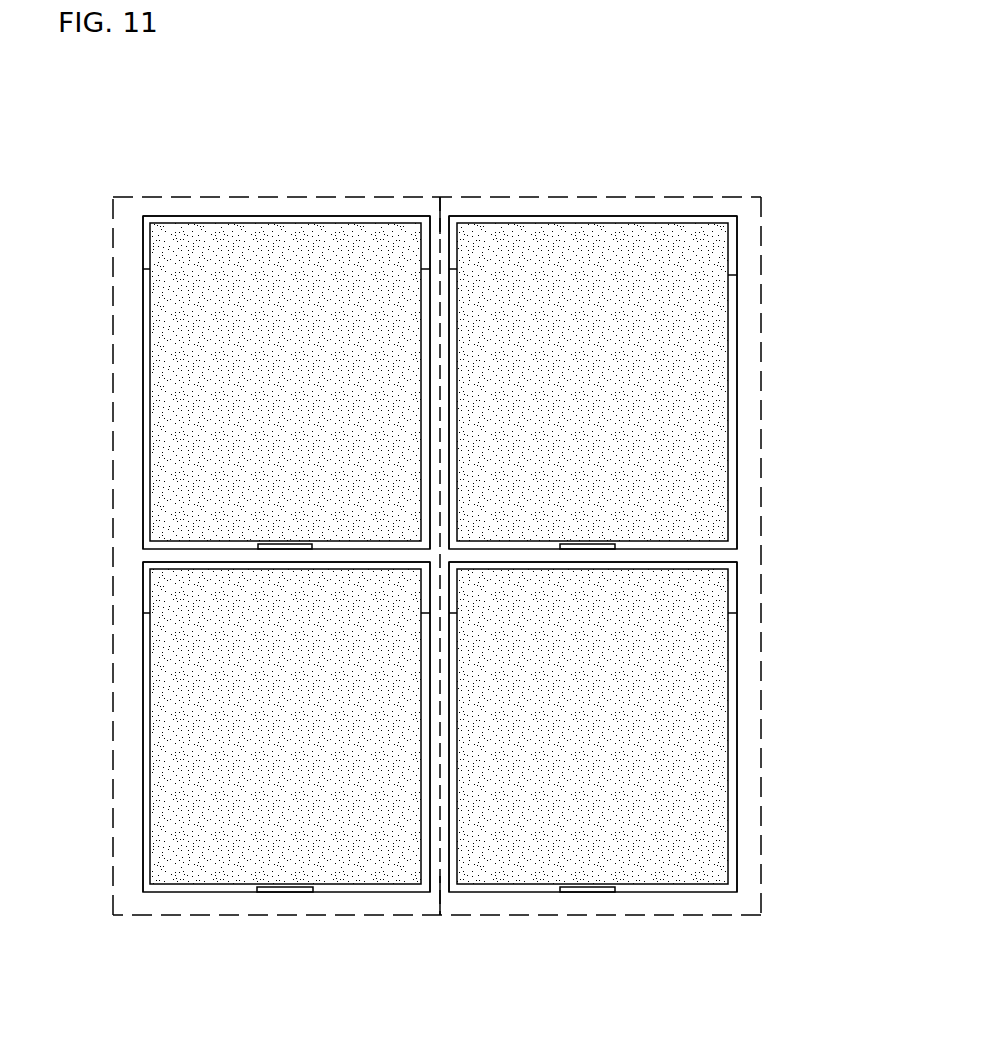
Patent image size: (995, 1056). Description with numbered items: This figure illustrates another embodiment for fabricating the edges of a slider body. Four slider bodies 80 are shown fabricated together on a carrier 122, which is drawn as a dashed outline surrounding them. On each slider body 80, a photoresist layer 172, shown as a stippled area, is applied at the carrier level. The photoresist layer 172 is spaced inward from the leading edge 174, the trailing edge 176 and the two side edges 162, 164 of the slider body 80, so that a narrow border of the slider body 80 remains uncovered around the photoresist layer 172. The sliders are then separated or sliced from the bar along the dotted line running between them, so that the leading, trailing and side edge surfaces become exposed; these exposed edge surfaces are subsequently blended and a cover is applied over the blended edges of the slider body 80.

The slider body 80 is at (188, 217).
The carrier 122 is at (720, 212).
The side edge 162 is at (440, 232).
The side edge 164 is at (438, 232).
The photoresist layer 172 is at (162, 265).
The leading edge 174 is at (273, 217).
The trailing edge 176 is at (167, 548).